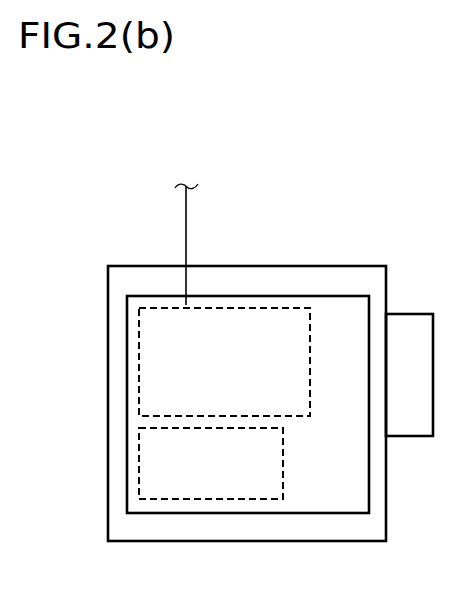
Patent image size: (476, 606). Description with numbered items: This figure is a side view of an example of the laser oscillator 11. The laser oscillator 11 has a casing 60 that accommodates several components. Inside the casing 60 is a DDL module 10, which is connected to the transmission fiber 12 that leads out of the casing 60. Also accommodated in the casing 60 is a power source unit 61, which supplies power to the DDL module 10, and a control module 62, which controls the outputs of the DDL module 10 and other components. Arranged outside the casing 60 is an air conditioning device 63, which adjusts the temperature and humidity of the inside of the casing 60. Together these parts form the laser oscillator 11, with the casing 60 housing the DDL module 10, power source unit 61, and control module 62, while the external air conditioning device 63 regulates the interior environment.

The laser oscillator 11 is at (261, 137).
The DDL module 10 is at (146, 371).
The transmission fiber 12 is at (186, 212).
The casing 60 is at (345, 266).
The power source unit 61 is at (146, 466).
The control module 62 is at (320, 514).
The air conditioning device 63 is at (410, 437).